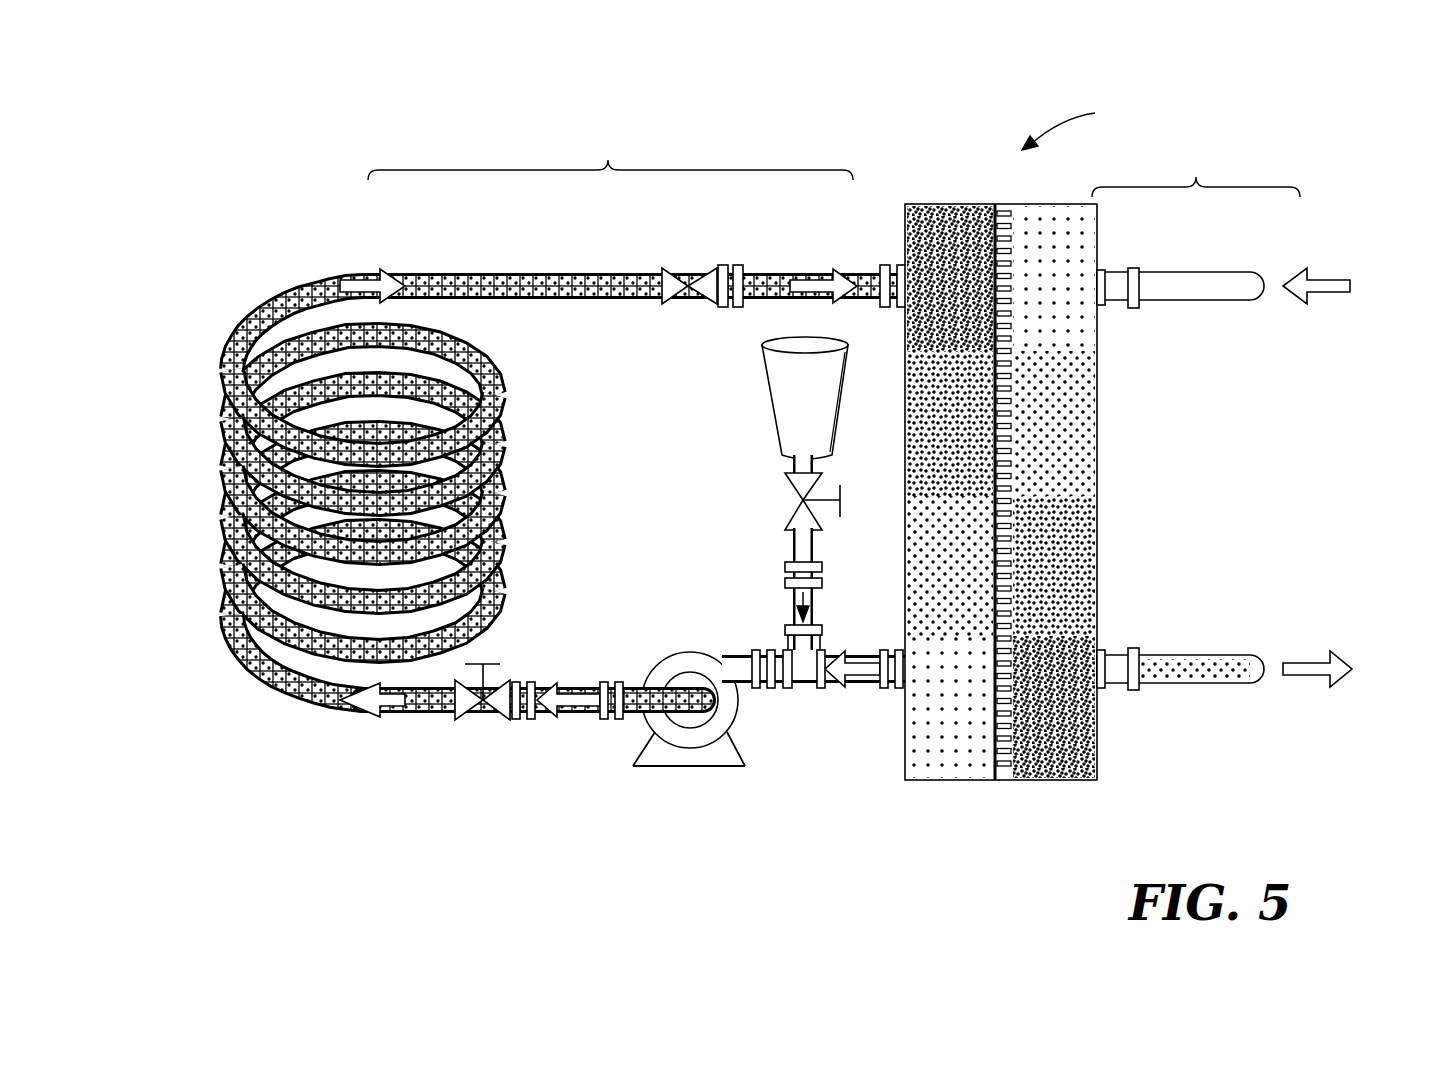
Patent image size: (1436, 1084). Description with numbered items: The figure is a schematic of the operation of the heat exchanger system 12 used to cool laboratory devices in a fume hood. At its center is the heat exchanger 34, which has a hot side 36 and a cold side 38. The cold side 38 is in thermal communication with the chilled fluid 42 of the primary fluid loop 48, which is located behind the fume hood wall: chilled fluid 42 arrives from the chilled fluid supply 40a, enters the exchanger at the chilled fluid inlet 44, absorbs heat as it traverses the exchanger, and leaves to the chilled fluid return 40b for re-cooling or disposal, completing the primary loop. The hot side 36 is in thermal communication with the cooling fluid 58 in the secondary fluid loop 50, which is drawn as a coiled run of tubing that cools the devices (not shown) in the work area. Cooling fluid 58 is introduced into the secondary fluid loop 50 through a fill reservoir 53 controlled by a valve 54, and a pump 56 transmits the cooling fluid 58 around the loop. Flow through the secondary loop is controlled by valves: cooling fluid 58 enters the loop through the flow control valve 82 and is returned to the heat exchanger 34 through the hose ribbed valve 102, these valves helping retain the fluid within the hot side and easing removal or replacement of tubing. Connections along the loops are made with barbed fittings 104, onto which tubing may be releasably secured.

The heat exchanger system 12 is at (1072, 126).
The heat exchanger 34 is at (1001, 512).
The hot side 36 is at (929, 337).
The cold side 38 is at (1032, 588).
The chilled fluid supply 40a is at (1172, 298).
The chilled fluid return 40b is at (1200, 662).
The chilled fluid 42 is at (1325, 292).
The chilled fluid inlet 44 is at (1103, 270).
The primary fluid loop 48 is at (1222, 442).
The secondary fluid loop 50 is at (598, 217).
The fill reservoir 53 is at (778, 383).
The valve 54 is at (815, 483).
The pump 56 is at (722, 758).
The cooling fluid 58 is at (433, 702).
The flow control valve 82 is at (508, 705).
The hose ribbed valve 102 is at (670, 283).
The barbed fittings 104 is at (738, 282).